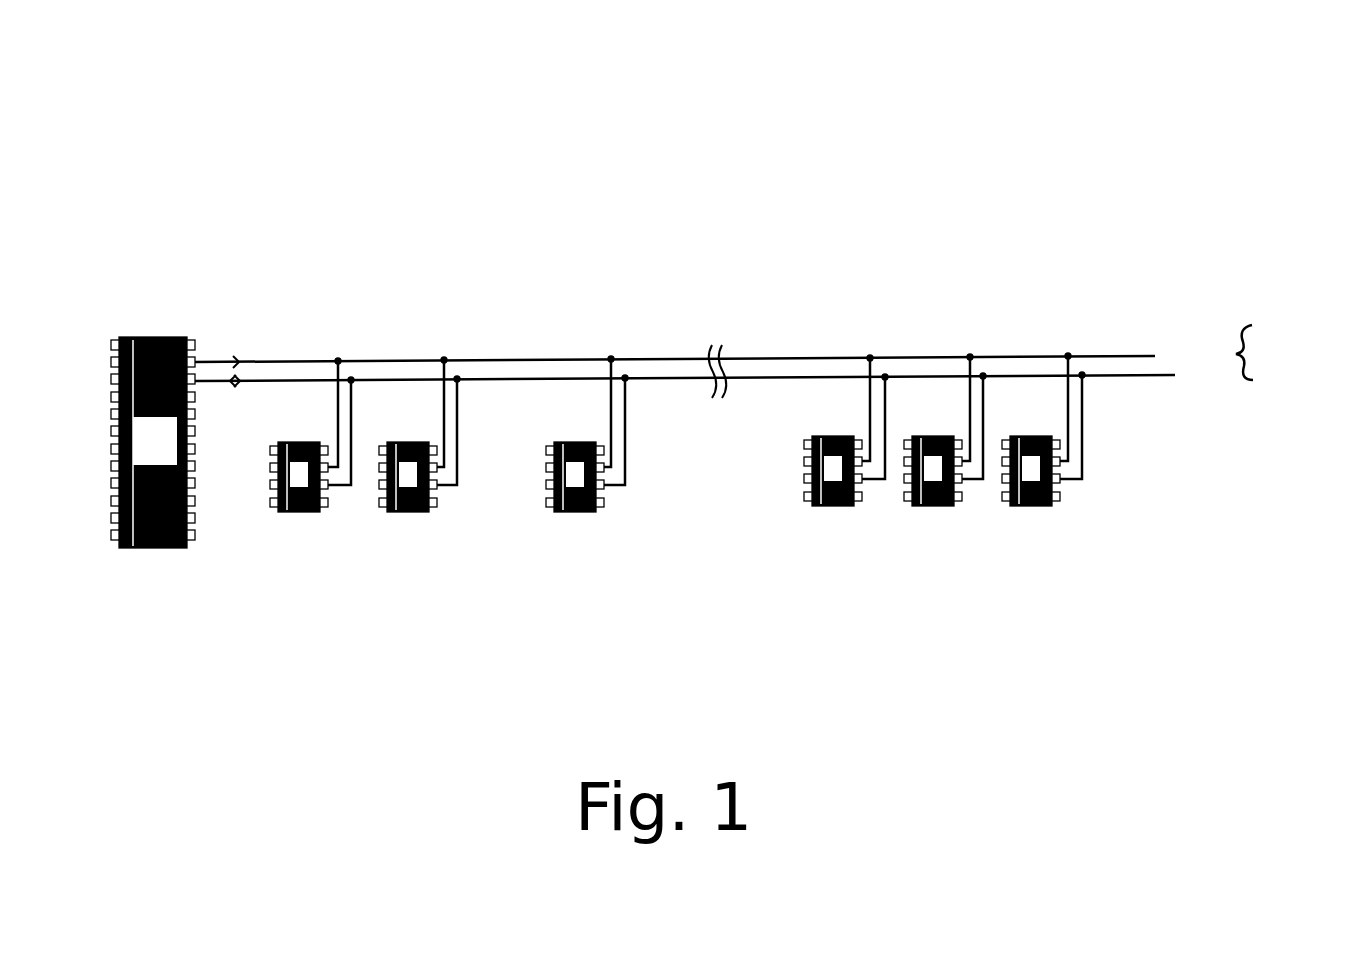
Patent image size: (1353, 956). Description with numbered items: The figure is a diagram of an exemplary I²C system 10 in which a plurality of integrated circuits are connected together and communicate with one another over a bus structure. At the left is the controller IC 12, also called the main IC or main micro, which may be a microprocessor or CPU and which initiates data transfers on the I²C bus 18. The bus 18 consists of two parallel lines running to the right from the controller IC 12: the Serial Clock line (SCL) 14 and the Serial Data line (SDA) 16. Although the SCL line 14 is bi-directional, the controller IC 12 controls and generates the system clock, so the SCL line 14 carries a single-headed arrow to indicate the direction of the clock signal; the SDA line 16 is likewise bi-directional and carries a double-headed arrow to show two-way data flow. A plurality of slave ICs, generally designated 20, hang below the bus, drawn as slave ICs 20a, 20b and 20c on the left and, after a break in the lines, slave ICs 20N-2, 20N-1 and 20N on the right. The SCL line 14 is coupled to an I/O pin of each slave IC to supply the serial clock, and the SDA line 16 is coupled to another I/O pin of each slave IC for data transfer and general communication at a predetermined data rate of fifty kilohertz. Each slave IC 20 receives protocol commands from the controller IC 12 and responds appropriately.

The I²C system 10 is at (1021, 160).
The controller IC 12 is at (143, 549).
The Serial Clock line (SCL) 14 is at (515, 360).
The Serial Data line (SDA) 16 is at (488, 380).
The I²C bus 18 is at (1262, 346).
The slave ICs 20 is at (1050, 548).
The slave IC 20a is at (300, 513).
The slave IC 20b is at (415, 512).
The slave IC 20c is at (580, 512).
The slave IC 20N-2 is at (823, 508).
The slave IC 20N-1 is at (920, 508).
The slave IC 20N is at (1038, 507).